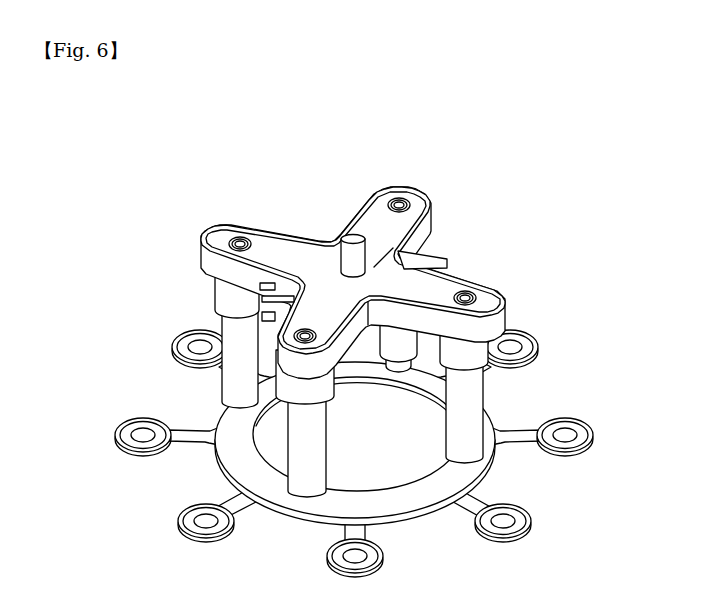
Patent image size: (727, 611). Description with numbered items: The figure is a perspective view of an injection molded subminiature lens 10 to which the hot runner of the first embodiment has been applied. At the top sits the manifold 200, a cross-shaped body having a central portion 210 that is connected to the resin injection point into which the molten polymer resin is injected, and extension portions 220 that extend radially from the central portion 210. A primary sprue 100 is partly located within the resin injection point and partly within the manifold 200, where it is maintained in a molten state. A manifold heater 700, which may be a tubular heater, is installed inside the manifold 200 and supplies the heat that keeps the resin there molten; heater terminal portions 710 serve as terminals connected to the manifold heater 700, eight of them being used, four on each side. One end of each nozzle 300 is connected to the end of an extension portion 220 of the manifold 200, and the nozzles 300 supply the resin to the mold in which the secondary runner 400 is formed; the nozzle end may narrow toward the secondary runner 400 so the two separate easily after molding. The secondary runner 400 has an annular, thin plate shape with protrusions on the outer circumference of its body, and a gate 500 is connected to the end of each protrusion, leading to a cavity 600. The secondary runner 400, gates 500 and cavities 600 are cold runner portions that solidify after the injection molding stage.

The injection molded subminiature lens 10 is at (580, 185).
The primary sprue 100 is at (353, 236).
The manifold 200 is at (261, 254).
The central portion 210 is at (418, 236).
The extension portion 220 is at (453, 294).
The nozzle 300 is at (237, 377).
The secondary runner 400 is at (337, 500).
The gate 500 is at (175, 455).
The cavity 600 is at (384, 555).
The manifold heater 700 is at (322, 247).
The heater terminal portion 710 is at (258, 288).